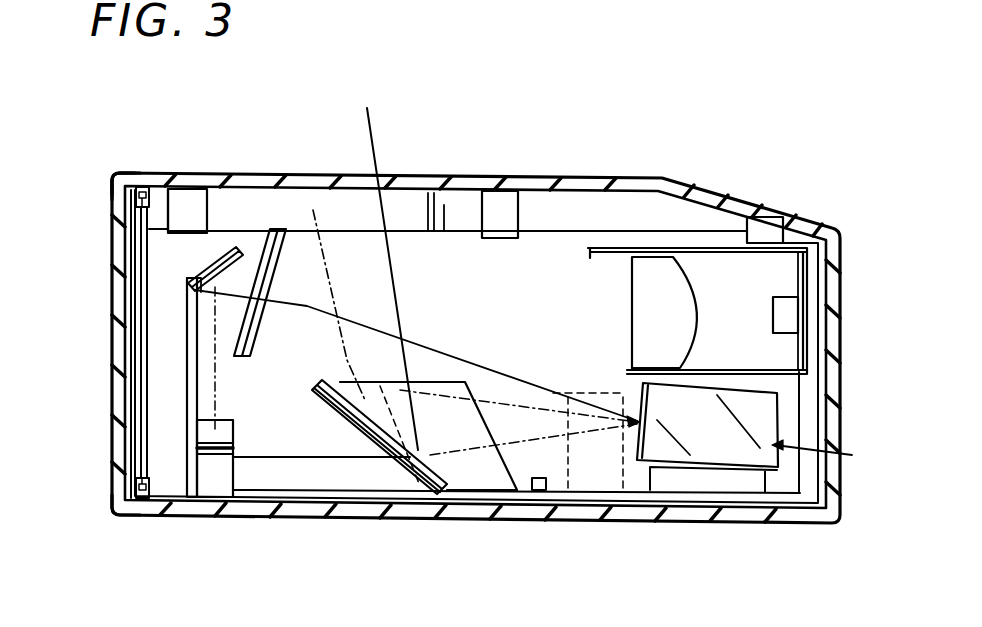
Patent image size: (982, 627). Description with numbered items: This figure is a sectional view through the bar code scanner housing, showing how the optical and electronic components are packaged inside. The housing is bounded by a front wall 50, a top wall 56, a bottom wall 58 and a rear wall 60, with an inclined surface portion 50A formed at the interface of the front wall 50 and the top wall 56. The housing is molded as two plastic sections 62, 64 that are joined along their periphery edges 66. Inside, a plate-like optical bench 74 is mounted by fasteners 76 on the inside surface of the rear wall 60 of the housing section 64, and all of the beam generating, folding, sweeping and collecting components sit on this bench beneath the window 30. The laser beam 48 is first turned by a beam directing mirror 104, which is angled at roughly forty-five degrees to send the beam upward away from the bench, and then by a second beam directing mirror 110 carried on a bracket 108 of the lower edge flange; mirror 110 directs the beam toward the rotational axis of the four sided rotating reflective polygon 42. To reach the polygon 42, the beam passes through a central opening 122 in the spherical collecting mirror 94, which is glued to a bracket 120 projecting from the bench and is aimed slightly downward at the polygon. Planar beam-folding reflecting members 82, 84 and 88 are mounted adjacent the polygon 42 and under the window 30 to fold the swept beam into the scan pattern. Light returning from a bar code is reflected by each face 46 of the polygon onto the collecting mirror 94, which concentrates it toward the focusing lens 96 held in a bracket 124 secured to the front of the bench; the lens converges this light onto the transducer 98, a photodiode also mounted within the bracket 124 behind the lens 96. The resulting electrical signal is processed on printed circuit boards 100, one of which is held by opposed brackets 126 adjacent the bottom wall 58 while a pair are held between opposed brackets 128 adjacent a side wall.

The window 30 is at (313, 210).
The four sided rotating reflective polygon 42 is at (831, 455).
The face of the polygon 46 is at (643, 400).
The laser beam 48 is at (300, 307).
The front wall 50 is at (240, 171).
The inclined surface portion 50A is at (760, 212).
The top wall 56 is at (838, 382).
The bottom wall 58 is at (112, 215).
The rear wall 60 is at (355, 512).
The plastic section 62 is at (119, 166).
The plastic section 64 is at (111, 504).
The periphery edges 66 is at (126, 340).
The optical bench 74 is at (258, 515).
The fasteners 76 is at (539, 492).
The beam-folding reflecting member 82 is at (322, 382).
The beam-folding reflecting member 84 is at (560, 475).
The beam-folding reflecting member 88 is at (463, 383).
The collecting mirror 94 is at (283, 230).
The focusing lens 96 is at (630, 313).
The transducer 98 is at (773, 314).
The printed circuit board 100 is at (480, 287).
The beam directing mirror 104 is at (215, 433).
The bracket 108 is at (190, 346).
The beam directing mirror 110 is at (190, 293).
The bracket 120 is at (250, 237).
The central opening 122 is at (268, 300).
The bracket 124 is at (608, 257).
The brackets 126 is at (144, 186).
The brackets 128 is at (496, 190).